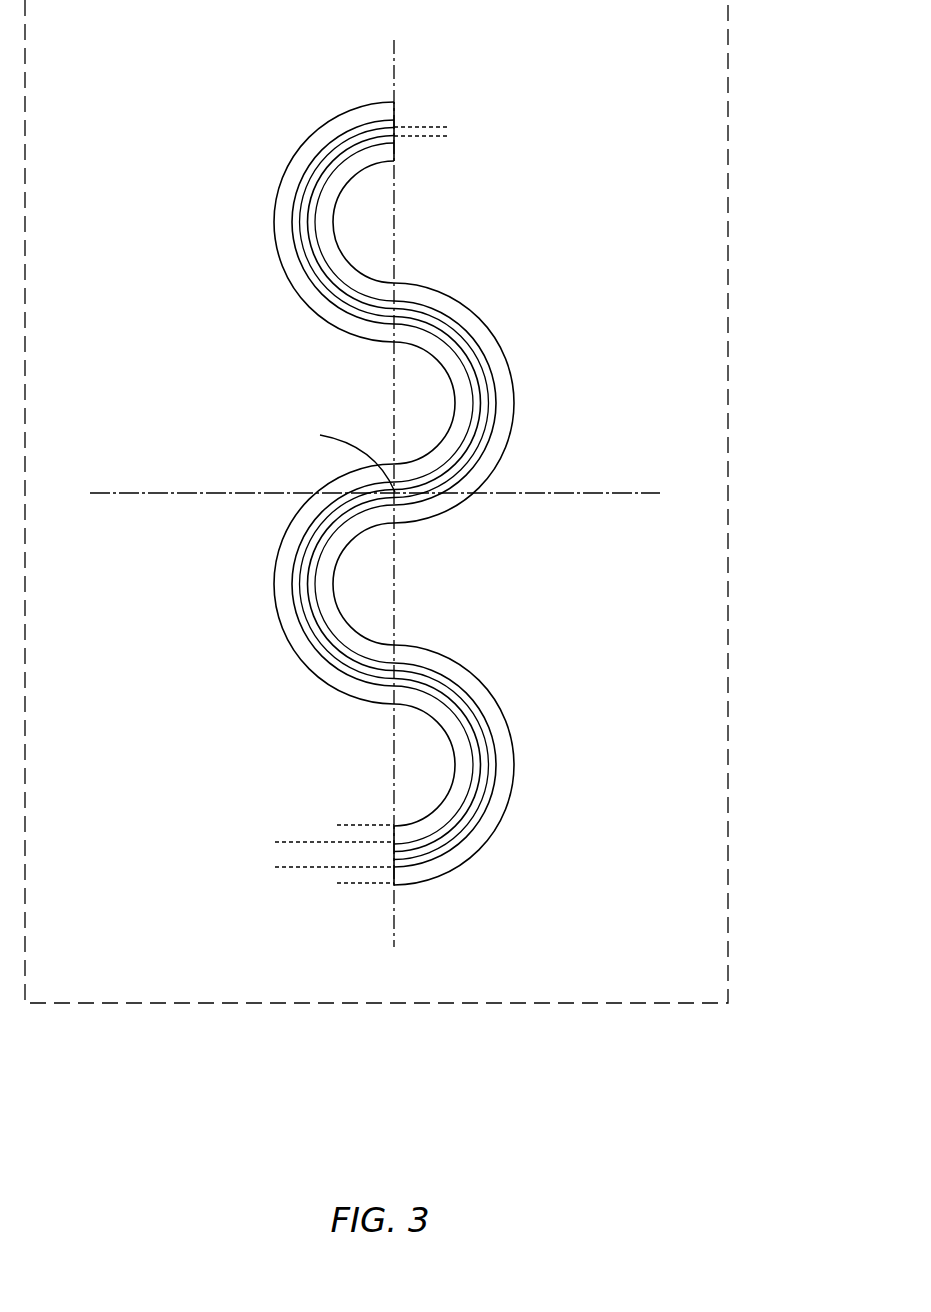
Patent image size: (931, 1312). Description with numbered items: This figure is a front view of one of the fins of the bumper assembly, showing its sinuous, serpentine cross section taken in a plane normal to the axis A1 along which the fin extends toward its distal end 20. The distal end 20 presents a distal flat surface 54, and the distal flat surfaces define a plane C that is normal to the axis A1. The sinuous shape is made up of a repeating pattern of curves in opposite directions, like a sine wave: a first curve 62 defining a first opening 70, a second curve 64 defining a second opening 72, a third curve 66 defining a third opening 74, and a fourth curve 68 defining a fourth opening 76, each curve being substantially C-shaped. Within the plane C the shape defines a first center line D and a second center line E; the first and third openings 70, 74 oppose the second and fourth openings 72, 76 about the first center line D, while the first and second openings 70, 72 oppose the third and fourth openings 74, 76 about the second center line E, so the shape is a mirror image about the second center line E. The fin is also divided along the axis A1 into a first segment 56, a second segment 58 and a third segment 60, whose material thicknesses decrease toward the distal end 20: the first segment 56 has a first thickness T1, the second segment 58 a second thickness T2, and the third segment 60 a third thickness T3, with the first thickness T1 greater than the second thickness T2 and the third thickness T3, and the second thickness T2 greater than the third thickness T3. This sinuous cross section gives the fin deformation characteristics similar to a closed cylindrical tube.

The distal end 20 is at (425, 487).
The distal flat surface 54 is at (467, 348).
The first segment 56 is at (333, 113).
The second segment 58 is at (475, 828).
The third segment 60 is at (300, 608).
The first curve 62 is at (272, 193).
The second curve 64 is at (521, 413).
The third curve 66 is at (273, 554).
The fourth curve 68 is at (521, 777).
The first opening 70 is at (360, 208).
The second opening 72 is at (436, 403).
The third opening 74 is at (359, 569).
The fourth opening 76 is at (436, 764).
The axis A1 is at (341, 457).
The first thickness T1 is at (348, 930).
The second thickness T2 is at (292, 915).
The third thickness T3 is at (437, 180).
The plane C is at (728, 32).
The first center line D is at (394, 510).
The second center line E is at (384, 492).